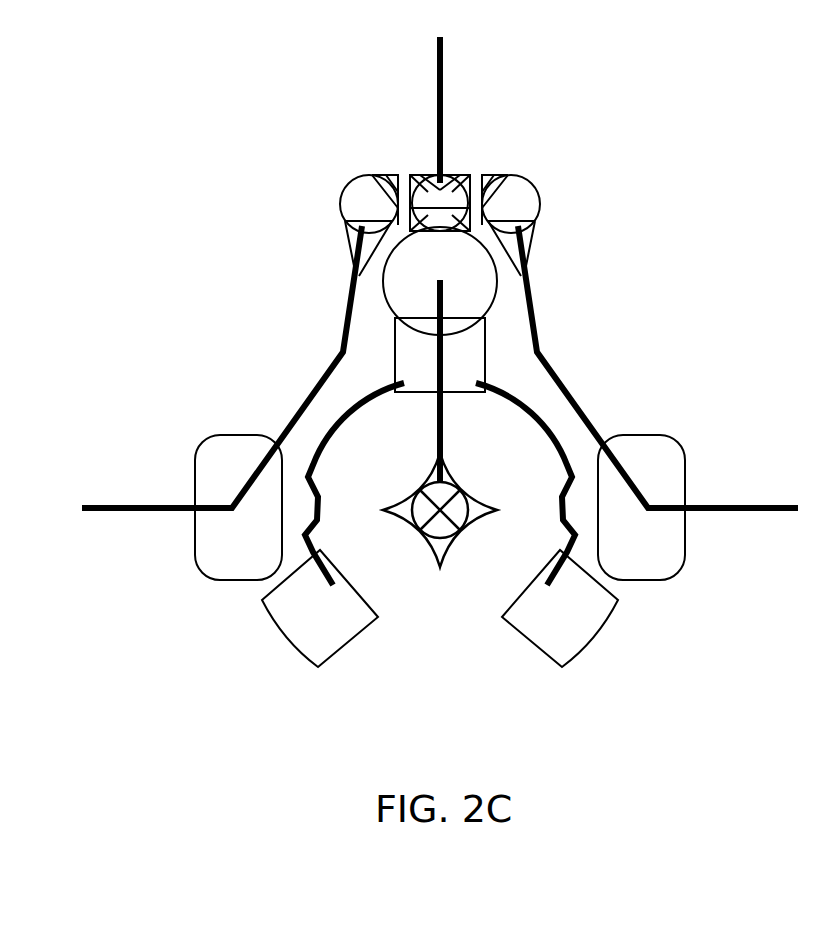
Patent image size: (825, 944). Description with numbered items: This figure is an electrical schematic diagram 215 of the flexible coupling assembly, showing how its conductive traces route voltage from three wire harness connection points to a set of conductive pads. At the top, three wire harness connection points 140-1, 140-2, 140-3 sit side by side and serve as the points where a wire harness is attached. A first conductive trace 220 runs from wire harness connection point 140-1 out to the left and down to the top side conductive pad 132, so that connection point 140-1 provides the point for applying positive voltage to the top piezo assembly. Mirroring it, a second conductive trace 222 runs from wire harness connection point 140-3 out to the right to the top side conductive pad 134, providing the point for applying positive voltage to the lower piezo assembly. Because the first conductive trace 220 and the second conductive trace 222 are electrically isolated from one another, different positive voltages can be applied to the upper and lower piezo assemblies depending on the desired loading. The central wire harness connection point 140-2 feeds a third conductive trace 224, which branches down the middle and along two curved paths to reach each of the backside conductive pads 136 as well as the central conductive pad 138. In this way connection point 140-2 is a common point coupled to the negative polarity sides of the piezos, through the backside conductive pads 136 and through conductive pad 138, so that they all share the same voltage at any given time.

The electrical schematic diagram 215 is at (199, 255).
The wire harness connection point 140-1 is at (345, 176).
The wire harness connection point 140-2 is at (460, 174).
The wire harness connection point 140-3 is at (530, 176).
The backside conductive pads 136 is at (395, 343).
The first conductive trace 220 is at (311, 393).
The second conductive trace 222 is at (569, 393).
The third conductive trace 224 is at (357, 405).
The top side conductive pad 132 is at (227, 580).
The top side conductive pad 134 is at (653, 580).
The conductive pad 138 is at (440, 567).